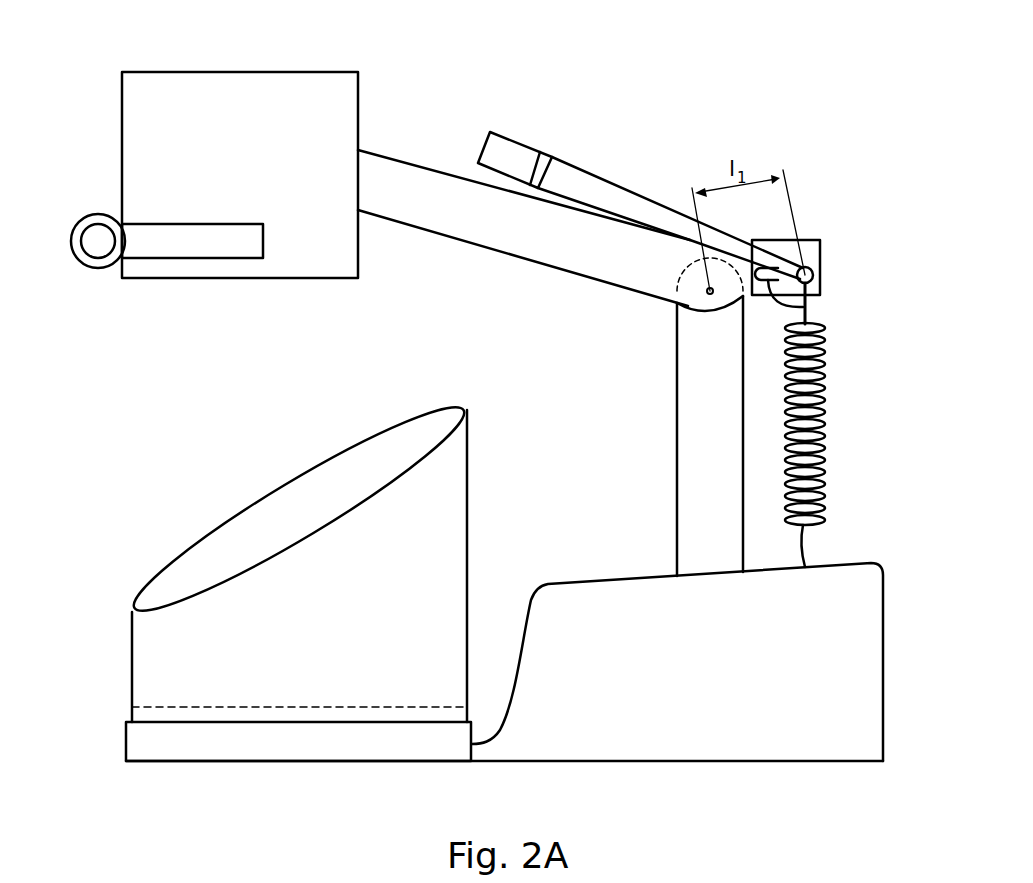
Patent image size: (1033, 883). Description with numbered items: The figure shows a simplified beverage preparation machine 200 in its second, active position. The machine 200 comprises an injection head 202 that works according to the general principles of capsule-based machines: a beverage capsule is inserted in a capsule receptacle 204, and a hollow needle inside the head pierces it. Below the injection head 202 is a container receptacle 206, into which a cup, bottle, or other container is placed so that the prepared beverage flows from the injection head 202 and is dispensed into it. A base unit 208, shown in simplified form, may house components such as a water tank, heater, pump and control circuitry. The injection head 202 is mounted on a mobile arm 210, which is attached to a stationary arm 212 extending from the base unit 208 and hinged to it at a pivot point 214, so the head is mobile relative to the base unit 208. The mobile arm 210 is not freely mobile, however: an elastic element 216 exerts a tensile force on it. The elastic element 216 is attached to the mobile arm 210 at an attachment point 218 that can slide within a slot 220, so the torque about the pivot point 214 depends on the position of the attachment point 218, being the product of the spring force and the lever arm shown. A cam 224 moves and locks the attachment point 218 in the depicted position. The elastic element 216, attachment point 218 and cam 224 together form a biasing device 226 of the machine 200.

The beverage preparation machine 200 is at (124, 411).
The injection head 202 is at (236, 72).
The capsule receptacle 204 is at (167, 245).
The container receptacle 206 is at (147, 662).
The base unit 208 is at (867, 674).
The mobile arm 210 is at (473, 228).
The stationary arm 212 is at (690, 476).
The pivot point 214 is at (688, 296).
The elastic element 216 is at (825, 424).
The attachment point 218 is at (828, 265).
The slot 220 is at (808, 300).
The cam 224 is at (503, 147).
The biasing device 226 is at (821, 205).